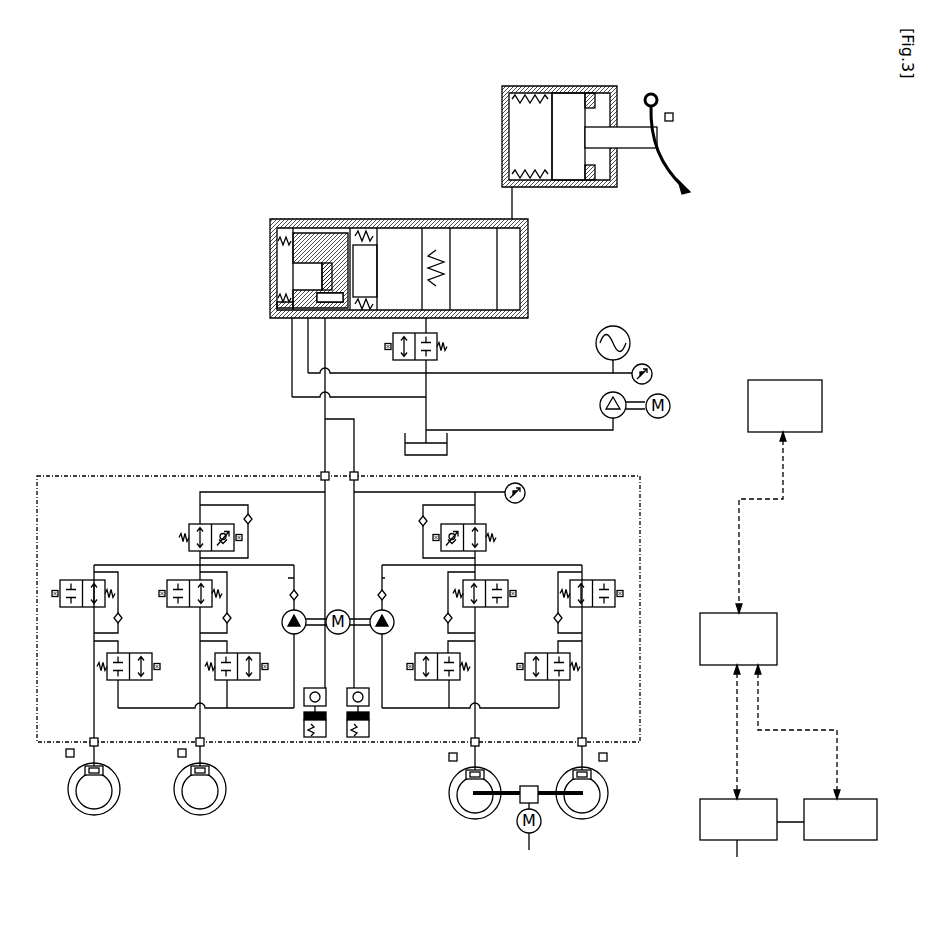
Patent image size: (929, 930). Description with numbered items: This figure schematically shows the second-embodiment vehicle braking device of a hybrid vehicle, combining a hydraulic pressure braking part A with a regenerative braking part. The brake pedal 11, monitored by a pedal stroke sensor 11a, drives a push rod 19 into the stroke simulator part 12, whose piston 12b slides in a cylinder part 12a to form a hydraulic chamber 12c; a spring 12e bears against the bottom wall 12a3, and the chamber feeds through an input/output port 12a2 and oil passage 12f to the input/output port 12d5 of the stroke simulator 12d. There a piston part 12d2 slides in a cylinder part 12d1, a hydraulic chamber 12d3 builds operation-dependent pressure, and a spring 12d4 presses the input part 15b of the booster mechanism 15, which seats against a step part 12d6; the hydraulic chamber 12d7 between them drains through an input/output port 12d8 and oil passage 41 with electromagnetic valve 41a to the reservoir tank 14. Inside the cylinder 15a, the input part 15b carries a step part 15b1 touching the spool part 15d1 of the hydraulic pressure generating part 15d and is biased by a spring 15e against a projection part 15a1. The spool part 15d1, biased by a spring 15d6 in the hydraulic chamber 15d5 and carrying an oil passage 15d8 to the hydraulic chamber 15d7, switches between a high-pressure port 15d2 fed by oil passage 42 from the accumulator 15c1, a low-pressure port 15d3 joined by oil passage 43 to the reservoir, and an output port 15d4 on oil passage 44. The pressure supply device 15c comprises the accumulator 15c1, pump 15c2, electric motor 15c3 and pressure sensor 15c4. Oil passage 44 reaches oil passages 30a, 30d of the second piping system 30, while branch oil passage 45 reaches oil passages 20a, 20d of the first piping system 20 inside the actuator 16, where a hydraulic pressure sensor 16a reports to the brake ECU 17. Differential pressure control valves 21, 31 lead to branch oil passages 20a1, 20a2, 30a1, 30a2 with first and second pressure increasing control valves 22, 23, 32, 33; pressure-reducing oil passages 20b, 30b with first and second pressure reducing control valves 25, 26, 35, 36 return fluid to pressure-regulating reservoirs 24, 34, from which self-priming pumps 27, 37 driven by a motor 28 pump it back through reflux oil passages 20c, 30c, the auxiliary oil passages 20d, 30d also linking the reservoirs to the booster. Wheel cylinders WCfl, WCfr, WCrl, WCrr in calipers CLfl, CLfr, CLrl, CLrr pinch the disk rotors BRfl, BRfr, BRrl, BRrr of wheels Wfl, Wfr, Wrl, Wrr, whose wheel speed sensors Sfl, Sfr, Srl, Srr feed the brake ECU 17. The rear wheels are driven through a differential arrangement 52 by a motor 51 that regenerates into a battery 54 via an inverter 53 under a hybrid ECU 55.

The hydraulic pressure braking part A is at (143, 118).
The brake pedal 11 is at (663, 170).
The pedal stroke sensor 11a is at (676, 117).
The push rod 19 is at (641, 150).
The stroke simulator part 12 is at (556, 122).
The cylinder part 12a is at (600, 86).
The input/output port 12a2 is at (540, 188).
The bottom wall 12a3 is at (503, 140).
The piston 12b is at (572, 95).
The hydraulic chamber 12c is at (553, 95).
The spring 12e is at (543, 127).
The oil passage 12f is at (515, 200).
The stroke simulator 12d is at (514, 277).
The cylinder part 12d1 is at (529, 240).
The piston part 12d2 is at (500, 278).
The hydraulic chamber 12d3 is at (495, 262).
The spring 12d4 is at (451, 255).
The input/output port 12d5 is at (535, 225).
The step part 12d6 is at (405, 260).
The hydraulic chamber 12d7 is at (452, 298).
The input/output port 12d8 is at (440, 325).
The booster mechanism 15 is at (375, 282).
The cylinder 15a is at (328, 218).
The projection part 15a1 is at (330, 218).
The input part 15b is at (375, 239).
The step part 15b1 is at (360, 218).
The spring 15e is at (381, 250).
The hydraulic pressure generating part 15d is at (235, 300).
The spool part 15d1 is at (300, 262).
The high-pressure port 15d2 is at (292, 325).
The low-pressure port 15d3 is at (282, 316).
The output port 15d4 is at (348, 318).
The hydraulic chamber 15d5 is at (296, 268).
The spring 15d6 is at (278, 242).
The hydraulic chamber 15d7 is at (318, 296).
The oil passage 15d8 is at (325, 270).
The pressure supply device 15c is at (648, 372).
The accumulator 15c1 is at (630, 343).
The pump 15c2 is at (600, 404).
The electric motor 15c3 is at (671, 406).
The pressure sensor 15c4 is at (652, 373).
The reservoir tank 14 is at (447, 444).
The oil passage 41 is at (427, 389).
The electromagnetic valve 41a is at (438, 358).
The oil passage 42 is at (345, 373).
The oil passage 43 is at (345, 397).
The oil passage 44 is at (325, 406).
The oil passage 45 is at (354, 432).
The actuator 16 is at (633, 479).
The hydraulic pressure sensor 16a is at (526, 493).
The brake ECU 17 is at (787, 380).
The second piping system 30 is at (207, 623).
The oil passage 30a is at (200, 521).
The oil passage 30a1 is at (199, 650).
The oil passage 30a2 is at (93, 650).
The oil passage 30b is at (185, 697).
The oil passage 30c is at (293, 674).
The oil passage 30d is at (324, 538).
The differential pressure control valve 31 is at (189, 534).
The first pressure increasing control valve 32 is at (170, 586).
The second pressure increasing control valve 33 is at (85, 580).
The pressure-regulating reservoir 34 is at (321, 738).
The first pressure reducing control valve 35 is at (239, 653).
The second pressure reducing control valve 36 is at (130, 653).
The self-priming pump 37 is at (283, 620).
The motor 28 is at (336, 610).
The first piping system 20 is at (487, 627).
The oil passage 20a is at (476, 522).
The oil passage 20a1 is at (476, 650).
The oil passage 20a2 is at (583, 650).
The oil passage 20b is at (498, 697).
The oil passage 20c is at (385, 674).
The oil passage 20d is at (355, 542).
The differential pressure control valve 21 is at (487, 536).
The first pressure increasing control valve 22 is at (509, 586).
The second pressure increasing control valve 23 is at (590, 580).
The pressure-regulating reservoir 24 is at (358, 738).
The first pressure reducing control valve 25 is at (437, 653).
The second pressure reducing control valve 26 is at (549, 653).
The self-priming pump 27 is at (393, 620).
The wheel speed sensor Sfl is at (66, 753).
The wheel speed sensor Sfr is at (178, 753).
The wheel speed sensor Srl is at (449, 757).
The wheel speed sensor Srr is at (607, 757).
The caliper CLfl is at (86, 771).
The caliper CLfr is at (192, 771).
The caliper CLrl is at (467, 775).
The caliper CLrr is at (592, 775).
The wheel cylinder WCfl is at (80, 782).
The wheel cylinder WCfr is at (186, 782).
The wheel cylinder WCrl is at (460, 785).
The wheel cylinder WCrr is at (598, 785).
The front left brake rotor BRfl is at (77, 803).
The front right brake rotor BRfr is at (183, 803).
The rear left brake rotor BRrl is at (458, 805).
The rear right brake rotor BRrr is at (603, 805).
The front-left wheel Wfl is at (73, 815).
The front-right wheel Wfr is at (180, 814).
The rear-left wheel Wrl is at (456, 818).
The rear-right wheel Wrr is at (603, 815).
The motor 51 is at (542, 822).
The differential arrangement 52 is at (530, 786).
The inverter 53 is at (720, 799).
The battery 54 is at (824, 799).
The hybrid ECU 55 is at (750, 613).